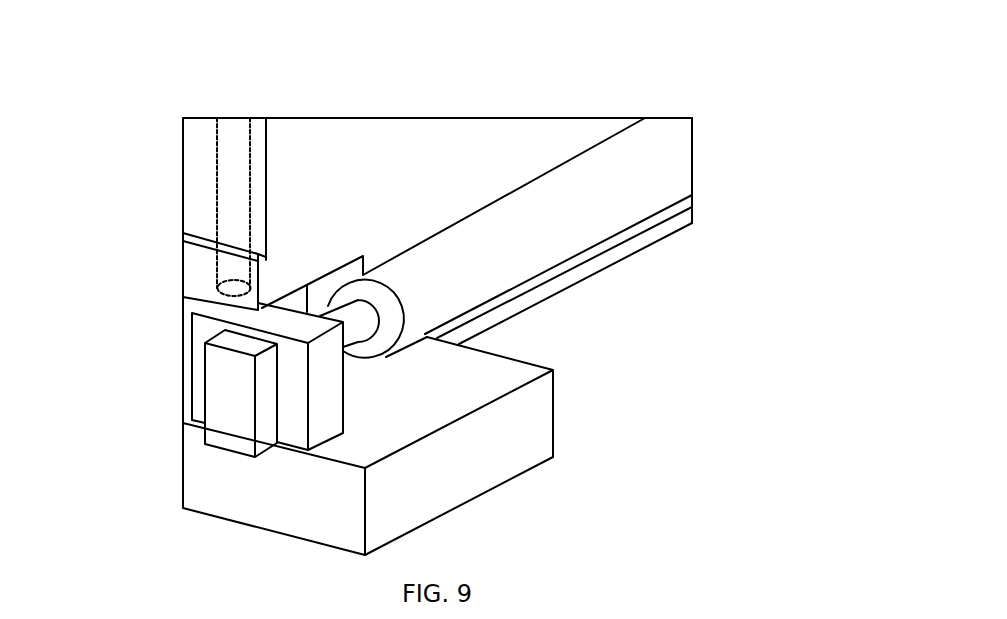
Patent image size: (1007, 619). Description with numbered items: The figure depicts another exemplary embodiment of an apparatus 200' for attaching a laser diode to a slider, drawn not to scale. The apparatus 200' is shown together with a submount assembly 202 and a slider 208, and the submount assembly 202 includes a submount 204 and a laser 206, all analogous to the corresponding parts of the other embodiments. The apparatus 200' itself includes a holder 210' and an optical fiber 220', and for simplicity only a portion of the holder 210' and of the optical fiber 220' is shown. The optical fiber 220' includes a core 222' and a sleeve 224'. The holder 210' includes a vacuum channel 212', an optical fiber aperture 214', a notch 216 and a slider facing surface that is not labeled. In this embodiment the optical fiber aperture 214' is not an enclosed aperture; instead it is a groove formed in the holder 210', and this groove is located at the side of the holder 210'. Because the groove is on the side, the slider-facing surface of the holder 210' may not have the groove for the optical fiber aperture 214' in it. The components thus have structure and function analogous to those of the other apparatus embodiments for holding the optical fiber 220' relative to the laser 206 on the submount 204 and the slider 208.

The apparatus 200' is at (421, 280).
The holder 210' is at (430, 247).
The vacuum channel 212' is at (197, 184).
The optical fiber aperture 214' is at (745, 170).
The notch 216 is at (175, 313).
The optical fiber 220' is at (513, 214).
The core 222' is at (383, 214).
The sleeve 224' is at (595, 256).
The submount assembly 202 is at (193, 395).
The submount 204 is at (191, 373).
The laser 206 is at (228, 450).
The slider 208 is at (553, 430).